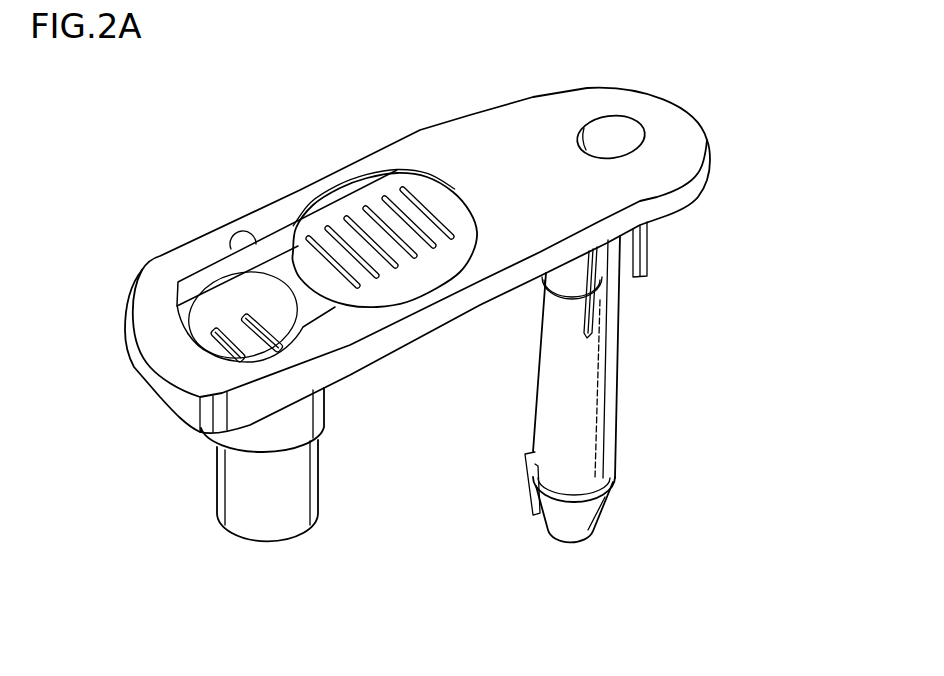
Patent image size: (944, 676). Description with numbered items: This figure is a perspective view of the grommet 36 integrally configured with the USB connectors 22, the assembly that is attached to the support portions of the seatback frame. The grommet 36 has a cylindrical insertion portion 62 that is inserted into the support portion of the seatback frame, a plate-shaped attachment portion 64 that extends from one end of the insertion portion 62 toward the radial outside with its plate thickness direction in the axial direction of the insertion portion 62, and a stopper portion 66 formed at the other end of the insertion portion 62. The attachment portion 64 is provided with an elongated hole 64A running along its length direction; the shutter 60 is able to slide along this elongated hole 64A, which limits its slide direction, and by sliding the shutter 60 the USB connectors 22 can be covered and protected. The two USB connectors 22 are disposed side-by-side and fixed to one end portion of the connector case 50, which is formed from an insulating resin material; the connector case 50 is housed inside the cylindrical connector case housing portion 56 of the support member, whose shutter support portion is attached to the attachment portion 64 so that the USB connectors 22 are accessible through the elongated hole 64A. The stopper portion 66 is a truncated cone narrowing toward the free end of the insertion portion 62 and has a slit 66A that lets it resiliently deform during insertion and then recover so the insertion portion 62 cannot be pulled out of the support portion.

The grommet 36 is at (693, 117).
The attachment portion 64 is at (495, 97).
The elongated hole 64A is at (240, 246).
The shutter 60 is at (323, 337).
The USB connectors 22 is at (256, 305).
The connector case 50 is at (172, 308).
The connector case housing portion 56 is at (220, 487).
The insertion portion 62 is at (627, 370).
The stopper portion 66 is at (622, 478).
The slit 66A is at (527, 456).